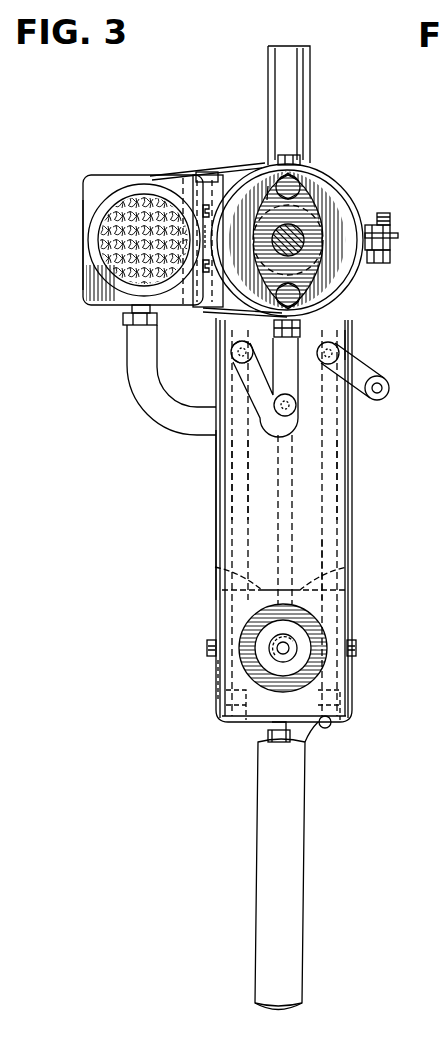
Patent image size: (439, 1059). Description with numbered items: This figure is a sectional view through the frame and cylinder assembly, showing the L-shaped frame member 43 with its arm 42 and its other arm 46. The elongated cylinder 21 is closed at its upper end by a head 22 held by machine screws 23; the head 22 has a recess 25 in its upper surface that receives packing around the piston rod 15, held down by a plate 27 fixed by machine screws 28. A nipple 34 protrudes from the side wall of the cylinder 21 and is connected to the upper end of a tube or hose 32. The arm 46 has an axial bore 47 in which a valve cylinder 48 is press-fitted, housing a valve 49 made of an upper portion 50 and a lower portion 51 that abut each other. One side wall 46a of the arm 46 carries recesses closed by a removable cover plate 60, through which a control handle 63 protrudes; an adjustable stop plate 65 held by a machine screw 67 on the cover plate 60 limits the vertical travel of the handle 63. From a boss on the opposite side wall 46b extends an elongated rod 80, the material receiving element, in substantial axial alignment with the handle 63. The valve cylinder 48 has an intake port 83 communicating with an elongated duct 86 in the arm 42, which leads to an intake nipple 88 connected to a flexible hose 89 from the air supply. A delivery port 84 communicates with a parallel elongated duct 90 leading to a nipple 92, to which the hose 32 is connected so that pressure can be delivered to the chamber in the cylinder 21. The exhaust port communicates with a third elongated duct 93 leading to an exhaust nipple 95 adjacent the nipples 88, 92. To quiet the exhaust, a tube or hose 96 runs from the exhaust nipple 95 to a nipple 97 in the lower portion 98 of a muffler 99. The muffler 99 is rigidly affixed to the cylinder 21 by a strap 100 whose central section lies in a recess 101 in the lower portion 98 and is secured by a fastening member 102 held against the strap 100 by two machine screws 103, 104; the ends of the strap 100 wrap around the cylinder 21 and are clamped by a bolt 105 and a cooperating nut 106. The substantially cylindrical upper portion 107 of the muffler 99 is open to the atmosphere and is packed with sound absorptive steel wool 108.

The piston rod 15 is at (300, 236).
The elongated cylinder 21 is at (322, 220).
The head 22 is at (337, 267).
The machine screws 23 is at (290, 153).
The recess 25 is at (318, 207).
The plate 27 is at (267, 197).
The machine screws 28 is at (302, 183).
The tube or hose 32 is at (287, 378).
The nipple 34 is at (350, 344).
The arm 42 is at (216, 512).
The L-shaped frame member 43 is at (353, 531).
The arm 46 is at (338, 569).
The side wall 46a is at (308, 730).
The side wall 46b is at (225, 570).
The axial bore 47 is at (292, 640).
The valve cylinder 48 is at (302, 664).
The valve 49 is at (298, 647).
The upper portion 50 is at (272, 648).
The lower portion 51 is at (213, 692).
The cover plate 60 is at (331, 726).
The control handle 63 is at (265, 892).
The stop plate 65 is at (272, 736).
The machine screw 67 is at (286, 746).
The elongated rod 80 is at (293, 86).
The intake port 83 is at (352, 636).
The delivery port 84 is at (212, 672).
The elongated duct 86 is at (337, 496).
The intake nipple 88 is at (312, 360).
The tube or flexible hose 89 is at (372, 376).
The elongated duct 90 is at (232, 471).
The nipple 92 is at (238, 360).
The elongated duct 93 is at (280, 483).
The exhaust nipple 95 is at (297, 398).
The tube or hose 96 is at (137, 383).
The nipple 97 is at (123, 320).
The lower portion 98 is at (88, 292).
The muffler 99 is at (93, 270).
The strap 100 is at (214, 173).
The recess 101 is at (205, 178).
The fastening member 102 is at (207, 320).
The machine screw 103 is at (178, 178).
The machine screw 104 is at (208, 305).
The bolt 105 is at (392, 256).
The nut 106 is at (399, 231).
The upper portion 107 is at (105, 205).
The steel wool 108 is at (132, 248).